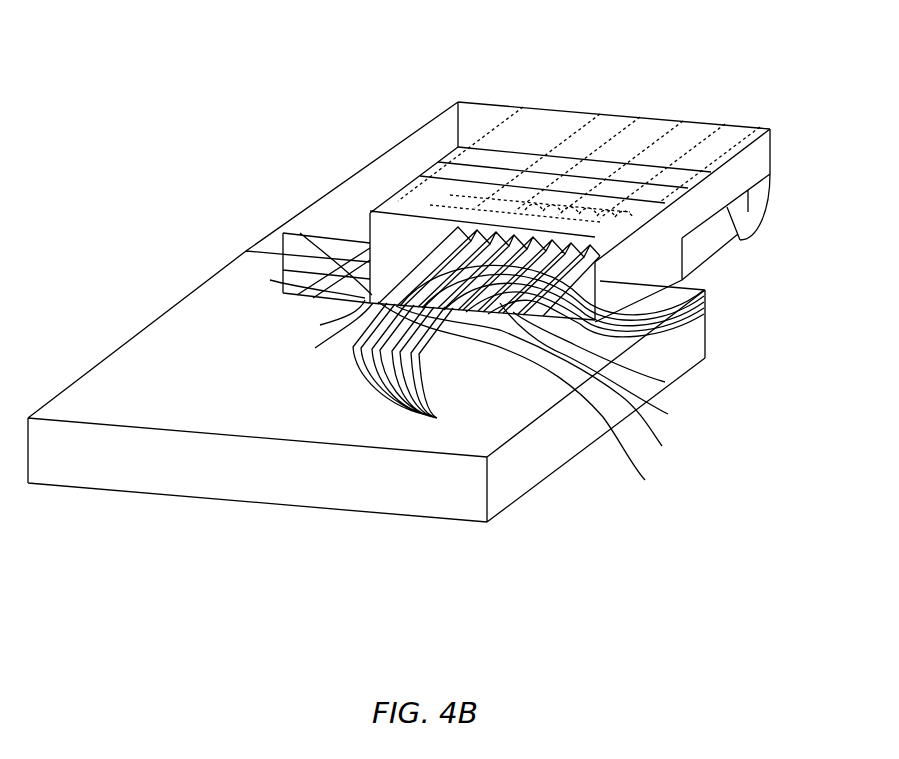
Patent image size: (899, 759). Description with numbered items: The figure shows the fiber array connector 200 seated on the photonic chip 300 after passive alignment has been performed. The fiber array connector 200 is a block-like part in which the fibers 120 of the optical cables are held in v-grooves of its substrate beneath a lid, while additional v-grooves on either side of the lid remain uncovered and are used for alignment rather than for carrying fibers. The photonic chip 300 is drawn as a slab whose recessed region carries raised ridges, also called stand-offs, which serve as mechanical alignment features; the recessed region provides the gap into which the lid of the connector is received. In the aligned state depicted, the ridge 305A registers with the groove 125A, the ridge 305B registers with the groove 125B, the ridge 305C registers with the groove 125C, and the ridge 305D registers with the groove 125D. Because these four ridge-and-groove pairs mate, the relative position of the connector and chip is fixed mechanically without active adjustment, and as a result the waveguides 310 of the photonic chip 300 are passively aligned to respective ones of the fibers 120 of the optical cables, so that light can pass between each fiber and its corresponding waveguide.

The fiber array connector 200 is at (408, 58).
The photonic chip 300 is at (233, 478).
The waveguides 310 is at (418, 366).
The fibers 120 is at (704, 314).
The groove 125A is at (270, 280).
The groove 125B is at (300, 233).
The groove 125C is at (665, 382).
The groove 125D is at (668, 414).
The ridge 305A is at (320, 325).
The ridge 305B is at (315, 348).
The ridge 305C is at (645, 480).
The ridge 305D is at (662, 446).